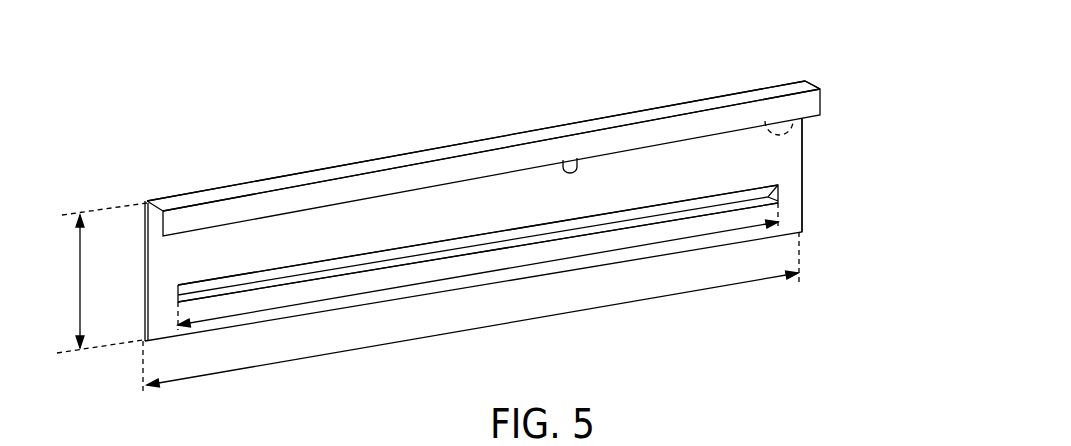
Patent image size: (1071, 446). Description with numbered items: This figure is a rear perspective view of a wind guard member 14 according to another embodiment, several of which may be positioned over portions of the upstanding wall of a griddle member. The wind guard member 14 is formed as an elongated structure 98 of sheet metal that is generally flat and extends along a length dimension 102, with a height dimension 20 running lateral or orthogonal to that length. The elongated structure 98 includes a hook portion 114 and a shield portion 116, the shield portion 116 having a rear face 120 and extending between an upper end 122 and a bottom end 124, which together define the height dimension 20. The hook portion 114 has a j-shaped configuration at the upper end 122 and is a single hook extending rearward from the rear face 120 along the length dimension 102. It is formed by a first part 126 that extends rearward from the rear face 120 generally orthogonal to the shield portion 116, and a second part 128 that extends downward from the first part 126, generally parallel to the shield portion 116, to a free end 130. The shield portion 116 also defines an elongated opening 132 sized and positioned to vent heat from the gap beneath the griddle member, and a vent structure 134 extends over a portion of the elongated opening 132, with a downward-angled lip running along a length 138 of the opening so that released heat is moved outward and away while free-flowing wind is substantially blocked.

The wind guard member 14 is at (850, 71).
The height dimension 20 is at (80, 269).
The elongated structure 98 is at (816, 168).
The length dimension 102 is at (757, 281).
The hook portion 114 is at (833, 102).
The shield portion 116 is at (172, 262).
The rear face 120 is at (790, 180).
The upper end 122 is at (781, 85).
The bottom end 124 is at (760, 236).
The first part 126 is at (467, 145).
The second part 128 is at (515, 158).
The free end 130 is at (575, 160).
The elongated opening 132 is at (530, 227).
The vent structure 134 is at (307, 263).
The length of the elongated opening 138 is at (343, 298).